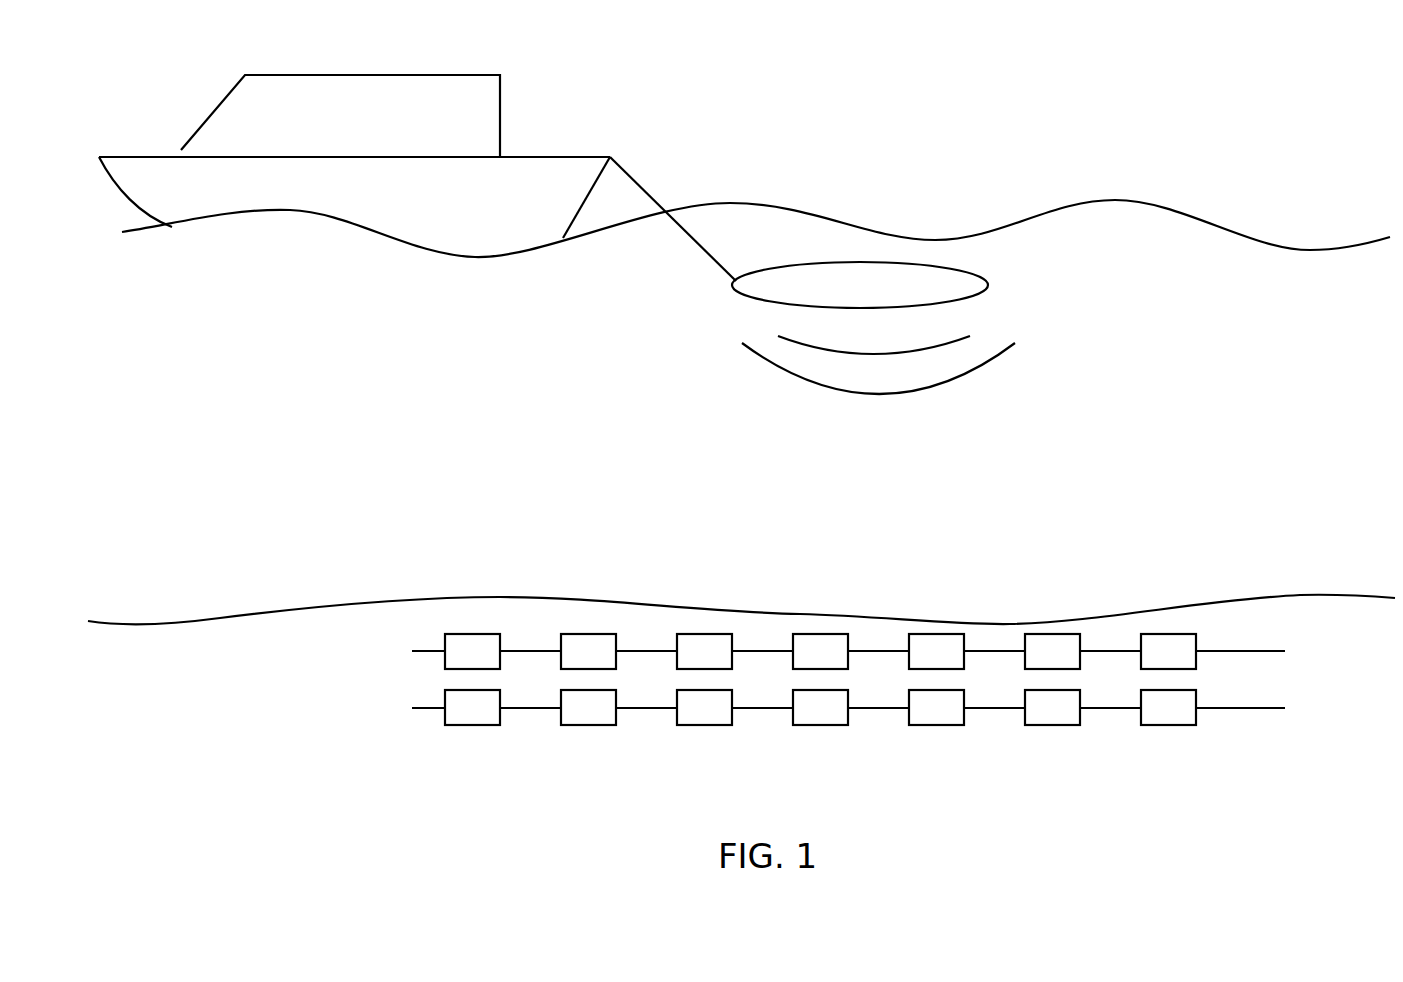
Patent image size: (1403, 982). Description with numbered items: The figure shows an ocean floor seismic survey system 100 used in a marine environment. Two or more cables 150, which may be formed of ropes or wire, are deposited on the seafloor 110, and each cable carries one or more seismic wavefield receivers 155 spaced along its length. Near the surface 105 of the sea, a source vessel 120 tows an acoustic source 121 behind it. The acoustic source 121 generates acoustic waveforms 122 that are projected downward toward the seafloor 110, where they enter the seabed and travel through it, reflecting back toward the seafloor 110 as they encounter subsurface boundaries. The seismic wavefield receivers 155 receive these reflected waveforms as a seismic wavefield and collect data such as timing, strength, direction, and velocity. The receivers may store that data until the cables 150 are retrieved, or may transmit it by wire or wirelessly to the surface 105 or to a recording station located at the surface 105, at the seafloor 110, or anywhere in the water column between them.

The ocean floor seismic survey system 100 is at (1241, 820).
The surface of the sea 105 is at (1058, 207).
The seafloor 110 is at (540, 598).
The source vessel 120 is at (213, 110).
The acoustic source 121 is at (990, 285).
The acoustic waveforms 122 is at (892, 386).
The cables 150 is at (412, 707).
The seismic wavefield receivers 155 is at (815, 634).